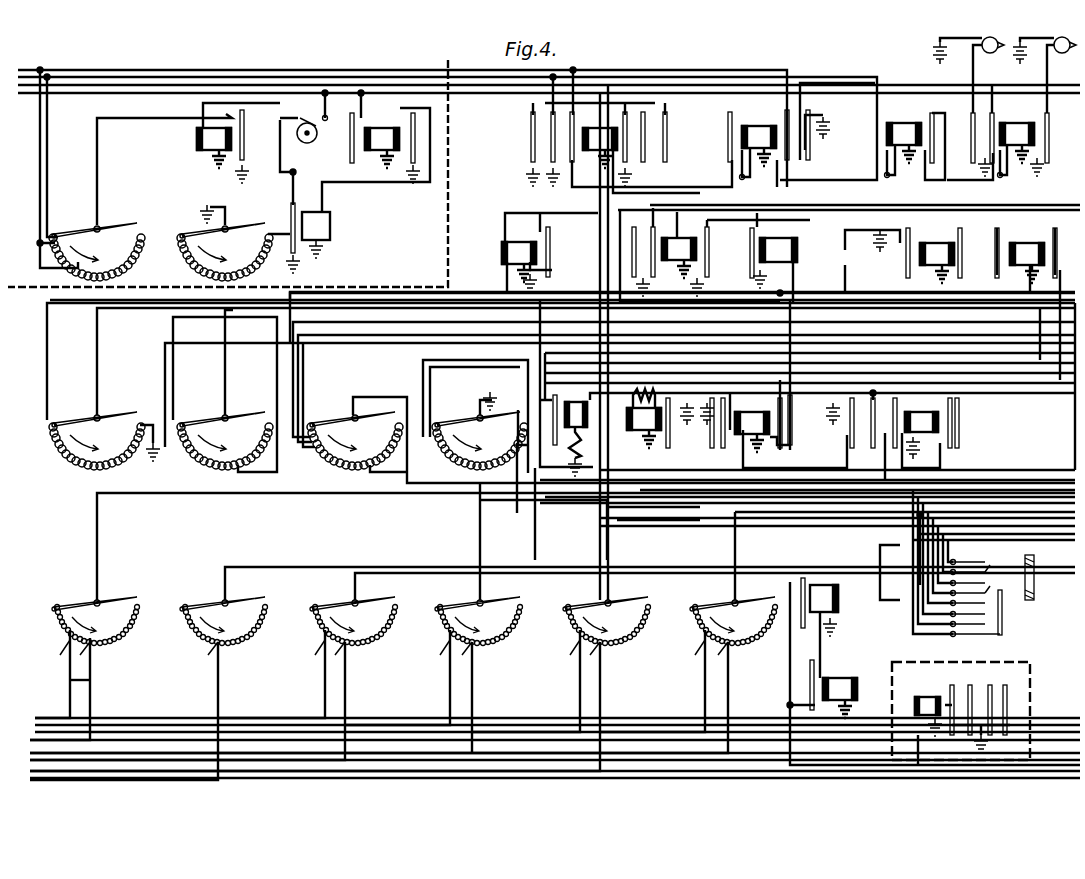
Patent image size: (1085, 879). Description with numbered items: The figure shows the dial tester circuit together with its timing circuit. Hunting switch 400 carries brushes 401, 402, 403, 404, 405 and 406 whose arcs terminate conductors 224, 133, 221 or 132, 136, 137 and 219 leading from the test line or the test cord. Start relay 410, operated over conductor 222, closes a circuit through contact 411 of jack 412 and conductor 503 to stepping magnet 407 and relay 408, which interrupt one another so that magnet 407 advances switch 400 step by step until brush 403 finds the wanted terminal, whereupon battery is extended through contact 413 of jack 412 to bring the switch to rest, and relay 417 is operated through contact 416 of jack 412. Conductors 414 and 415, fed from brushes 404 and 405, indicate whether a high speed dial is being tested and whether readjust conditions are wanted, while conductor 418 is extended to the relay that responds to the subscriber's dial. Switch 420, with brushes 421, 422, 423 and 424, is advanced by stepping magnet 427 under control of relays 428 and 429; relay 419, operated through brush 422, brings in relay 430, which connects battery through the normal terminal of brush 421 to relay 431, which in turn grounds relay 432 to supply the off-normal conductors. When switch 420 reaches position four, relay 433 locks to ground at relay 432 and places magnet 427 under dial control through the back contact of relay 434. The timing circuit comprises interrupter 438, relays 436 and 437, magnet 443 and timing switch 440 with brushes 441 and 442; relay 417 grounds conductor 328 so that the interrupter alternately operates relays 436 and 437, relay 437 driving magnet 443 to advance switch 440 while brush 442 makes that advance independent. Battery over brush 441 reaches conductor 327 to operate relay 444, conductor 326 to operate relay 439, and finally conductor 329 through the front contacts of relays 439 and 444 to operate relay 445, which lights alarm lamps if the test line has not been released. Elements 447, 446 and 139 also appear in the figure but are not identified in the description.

The conductor 326 is at (207, 70).
The conductor 327 is at (260, 77).
The conductor 329 is at (332, 85).
The conductor 328 is at (390, 93).
The relay 417 is at (598, 128).
The signal lamp 447 is at (993, 58).
The signal lamp 446 is at (1062, 53).
The interrupter 438 is at (309, 119).
The relay 436 is at (197, 140).
The relay 437 is at (365, 142).
The timing switch 440 is at (148, 175).
The brush 441 is at (116, 224).
The brush 442 is at (245, 215).
The magnet 443 is at (330, 226).
The relay 444 is at (758, 120).
The relay 439 is at (902, 117).
The relay 445 is at (1012, 125).
The relay 434 is at (1022, 243).
The relay 431 is at (505, 245).
The relay 432 is at (696, 250).
The relay 419 is at (797, 250).
The relay 430 is at (920, 255).
The switch 420 is at (123, 363).
The brush 421 is at (70, 413).
The brush 422 is at (197, 413).
The brush 423 is at (335, 412).
The brush 424 is at (470, 412).
The stepping magnet 427 is at (580, 430).
The relay 429 is at (648, 432).
The relay 428 is at (745, 434).
The relay 433 is at (960, 422).
The conductor 418 is at (152, 493).
The conductor 414 is at (480, 518).
The conductor 415 is at (610, 540).
The switch 400 is at (146, 553).
The brush 401 is at (68, 603).
The brush 402 is at (194, 603).
The brush 403 is at (322, 603).
The brush 404 is at (453, 603).
The brush 405 is at (580, 603).
The brush 406 is at (703, 603).
The stepping magnet 407 is at (838, 595).
The relay 408 is at (845, 670).
The start relay 410 is at (925, 690).
The contact 411 is at (988, 565).
The jack 412 is at (1048, 576).
The contact 413 is at (1002, 600).
The contact 416 is at (1000, 634).
The conductor 503 is at (790, 748).
The conductor 224 is at (90, 680).
The conductor 222 is at (128, 778).
The conductor 133 is at (218, 703).
The conductor 221 is at (325, 680).
The conductor 132 is at (345, 703).
The conductor 136 is at (472, 703).
The conductor 137 is at (600, 702).
The conductor 219 is at (705, 680).
The conductor 139 is at (728, 718).